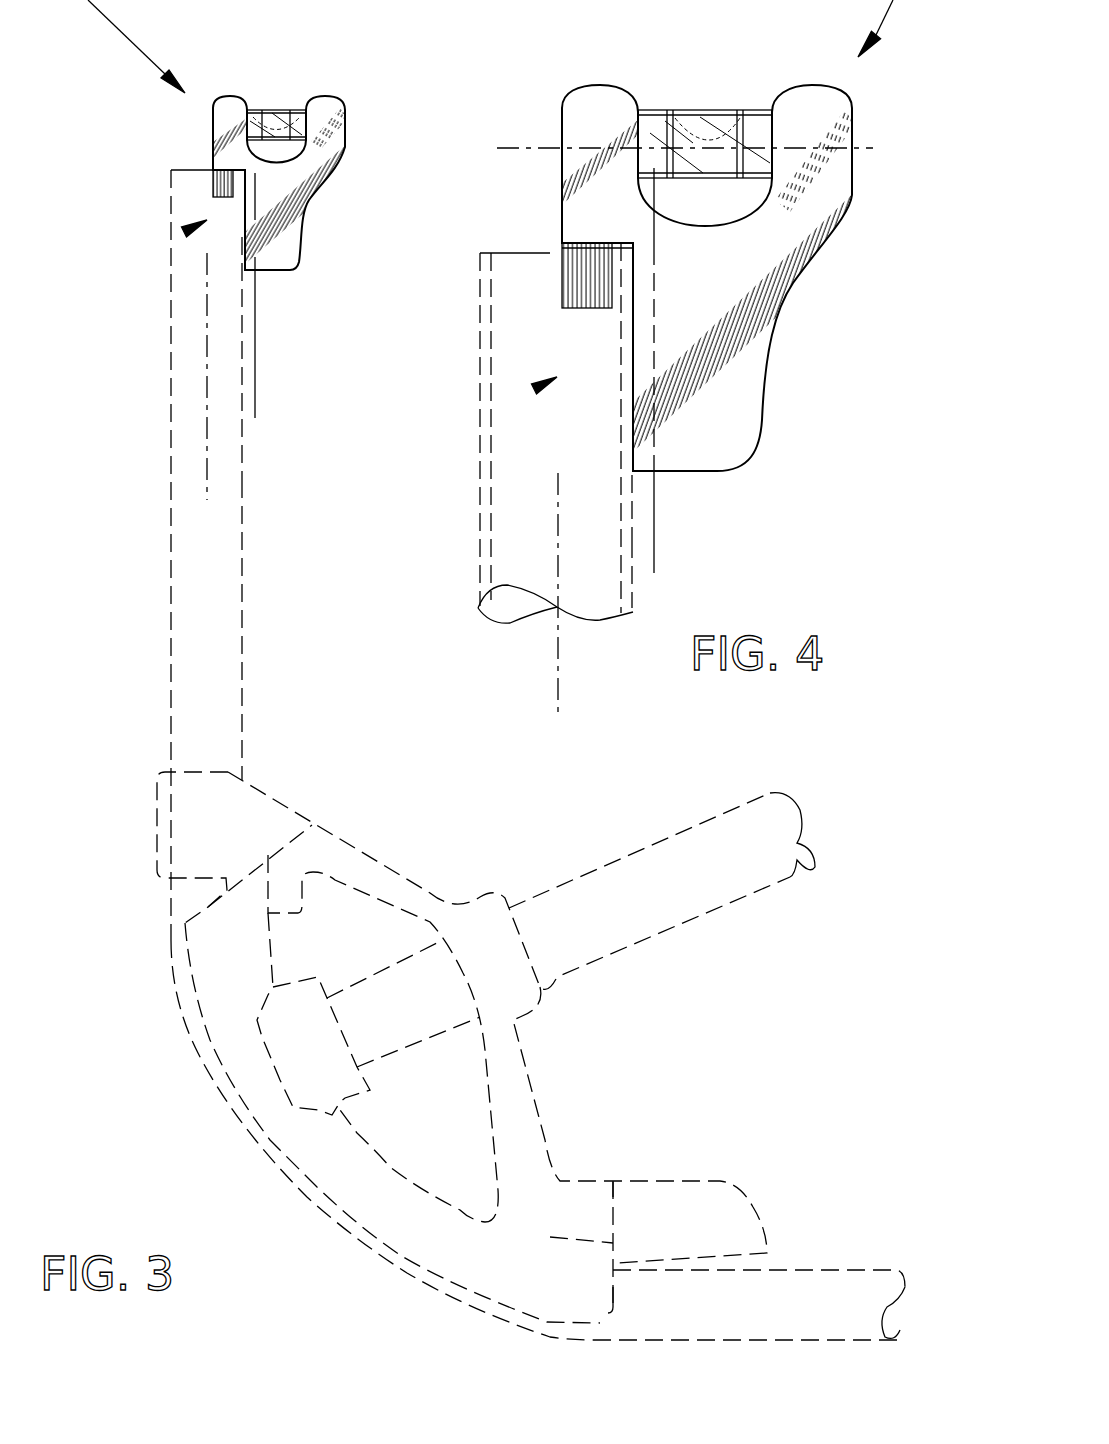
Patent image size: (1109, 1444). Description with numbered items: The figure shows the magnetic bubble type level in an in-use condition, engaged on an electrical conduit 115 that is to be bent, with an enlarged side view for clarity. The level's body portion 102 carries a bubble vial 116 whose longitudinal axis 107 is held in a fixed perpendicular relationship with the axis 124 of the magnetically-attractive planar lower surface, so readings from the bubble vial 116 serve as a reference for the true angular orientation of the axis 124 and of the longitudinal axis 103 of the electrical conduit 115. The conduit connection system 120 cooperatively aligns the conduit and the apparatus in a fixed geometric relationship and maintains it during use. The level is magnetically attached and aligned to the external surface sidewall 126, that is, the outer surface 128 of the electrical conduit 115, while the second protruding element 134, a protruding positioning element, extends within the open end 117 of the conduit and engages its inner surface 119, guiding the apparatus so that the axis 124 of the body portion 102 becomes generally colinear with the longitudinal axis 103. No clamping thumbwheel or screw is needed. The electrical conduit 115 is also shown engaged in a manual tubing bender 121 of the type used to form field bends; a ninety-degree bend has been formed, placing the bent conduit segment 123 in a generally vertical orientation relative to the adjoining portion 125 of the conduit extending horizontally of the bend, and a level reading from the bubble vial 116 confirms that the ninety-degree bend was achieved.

In FIG. 3, the body portion 102 is at (358, 60).
In FIG. 4, the body portion 102 is at (847, 392).
In FIG. 3, the longitudinal axis 103 is at (207, 463).
In FIG. 4, the longitudinal axis 103 is at (558, 681).
In FIG. 4, the longitudinal axis 107 is at (508, 147).
In FIG. 3, the electrical conduit 115 is at (242, 740).
In FIG. 4, the electrical conduit 115 is at (480, 572).
In FIG. 3, the bubble vial 116 is at (282, 108).
In FIG. 4, the bubble vial 116 is at (705, 110).
In FIG. 3, the open end 117 is at (188, 170).
In FIG. 4, the open end 117 is at (527, 252).
In FIG. 4, the inner surface 119 is at (622, 332).
In FIG. 3, the conduit connection system 120 is at (184, 232).
In FIG. 4, the conduit connection system 120 is at (534, 389).
In FIG. 3, the manual tubing bender 121 is at (660, 1180).
In FIG. 3, the bent conduit segment 123 is at (171, 598).
In FIG. 3, the axis 124 is at (255, 380).
In FIG. 4, the axis 124 is at (655, 537).
In FIG. 3, the adjoining portion 125 is at (817, 1270).
In FIG. 3, the surface sidewall 126 is at (242, 308).
In FIG. 4, the surface sidewall 126 is at (633, 485).
In FIG. 3, the outer surface 128 is at (242, 340).
In FIG. 4, the outer surface 128 is at (633, 517).
In FIG. 3, the second protruding element 134 is at (212, 188).
In FIG. 4, the second protruding element 134 is at (560, 280).